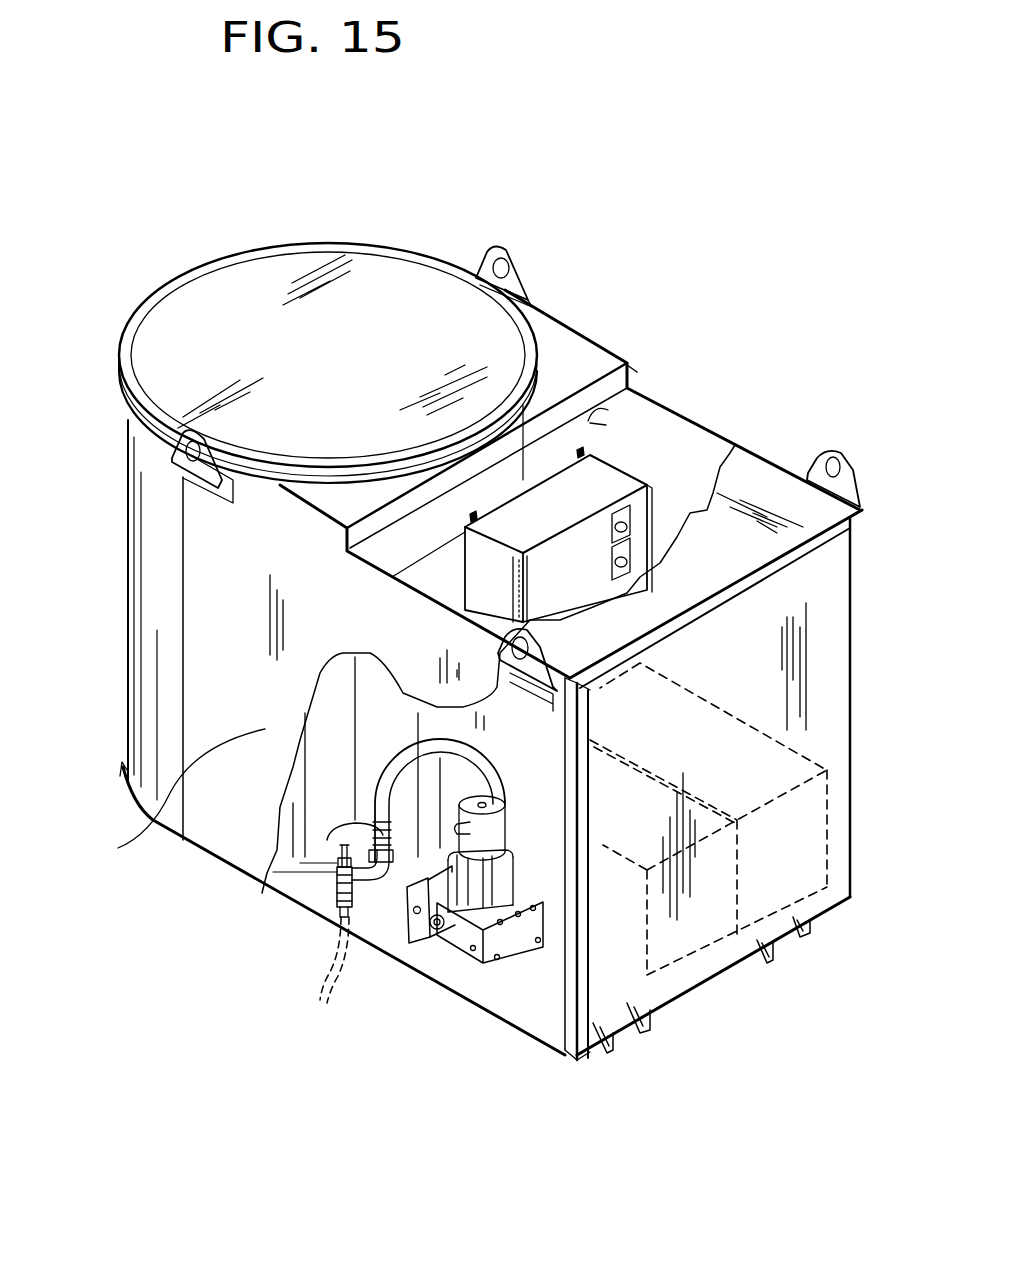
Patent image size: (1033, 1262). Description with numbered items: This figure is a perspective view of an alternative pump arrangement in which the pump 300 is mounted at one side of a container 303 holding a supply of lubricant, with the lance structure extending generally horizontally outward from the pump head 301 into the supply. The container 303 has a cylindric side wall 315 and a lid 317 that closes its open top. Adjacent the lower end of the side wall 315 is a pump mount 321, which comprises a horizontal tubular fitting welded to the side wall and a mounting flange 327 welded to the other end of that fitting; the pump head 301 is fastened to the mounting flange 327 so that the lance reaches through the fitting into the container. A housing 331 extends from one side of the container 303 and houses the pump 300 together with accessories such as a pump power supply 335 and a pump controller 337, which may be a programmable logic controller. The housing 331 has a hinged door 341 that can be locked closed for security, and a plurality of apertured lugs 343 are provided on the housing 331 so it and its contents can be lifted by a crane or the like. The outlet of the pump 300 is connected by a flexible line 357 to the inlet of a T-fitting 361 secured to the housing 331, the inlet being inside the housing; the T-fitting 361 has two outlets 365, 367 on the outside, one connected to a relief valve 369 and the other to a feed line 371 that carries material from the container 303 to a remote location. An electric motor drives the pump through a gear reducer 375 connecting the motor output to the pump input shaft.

The pump 300 is at (519, 970).
The pump head 301 is at (490, 941).
The container 303 is at (124, 598).
The cylindric side wall 315 is at (160, 515).
The lid 317 is at (374, 310).
The pump mount 321 is at (388, 897).
The mounting flange 327 is at (413, 943).
The housing 331 is at (158, 833).
The pump power supply 335 is at (808, 762).
The pump controller 337 is at (612, 466).
The hinged door 341 is at (610, 1010).
The apertured lugs 343 is at (510, 288).
The flexible line 357 is at (470, 742).
The T-fitting 361 is at (338, 910).
The outlet 365 is at (322, 878).
The outlet 367 is at (335, 930).
The relief valve 369 is at (337, 860).
The feed line 371 is at (322, 987).
The gear reducer 375 is at (515, 880).